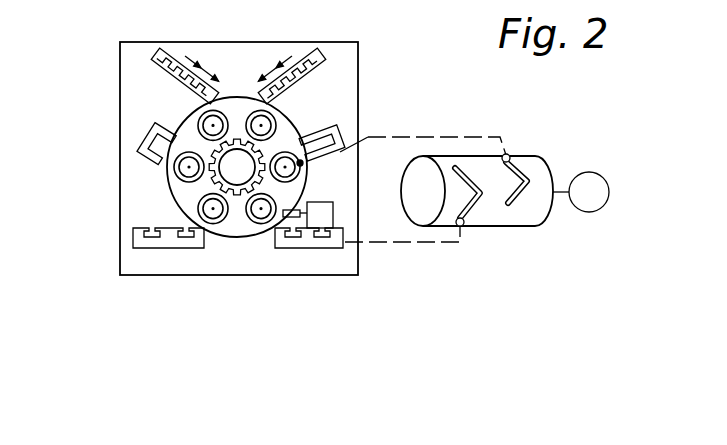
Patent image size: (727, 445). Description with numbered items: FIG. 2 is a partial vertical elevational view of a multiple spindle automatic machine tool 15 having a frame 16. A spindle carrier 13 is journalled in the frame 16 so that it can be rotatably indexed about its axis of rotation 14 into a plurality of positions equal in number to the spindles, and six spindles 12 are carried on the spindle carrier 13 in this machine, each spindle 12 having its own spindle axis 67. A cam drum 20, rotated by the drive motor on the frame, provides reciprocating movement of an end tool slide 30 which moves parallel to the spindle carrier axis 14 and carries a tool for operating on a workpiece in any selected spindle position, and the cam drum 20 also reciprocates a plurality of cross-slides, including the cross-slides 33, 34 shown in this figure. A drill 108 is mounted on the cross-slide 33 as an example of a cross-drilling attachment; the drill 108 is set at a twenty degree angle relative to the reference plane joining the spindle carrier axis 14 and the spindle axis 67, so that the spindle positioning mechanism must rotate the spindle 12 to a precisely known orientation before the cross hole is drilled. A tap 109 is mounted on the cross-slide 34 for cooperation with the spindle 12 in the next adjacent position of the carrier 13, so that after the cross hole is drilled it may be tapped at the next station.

The multiple spindle automatic machine tool 15 is at (120, 78).
The spindle carrier 13 is at (290, 128).
The end tool slide 30 is at (238, 139).
The axis of rotation 14 is at (236, 168).
The spindle 12 is at (306, 178).
The spindle axis 67 is at (308, 128).
The cross-slide 33 is at (334, 133).
The drill 108 is at (303, 164).
The frame 16 is at (227, 265).
The cross-slide 34 is at (340, 243).
The tap 109 is at (292, 228).
The cam drum 20 is at (517, 226).